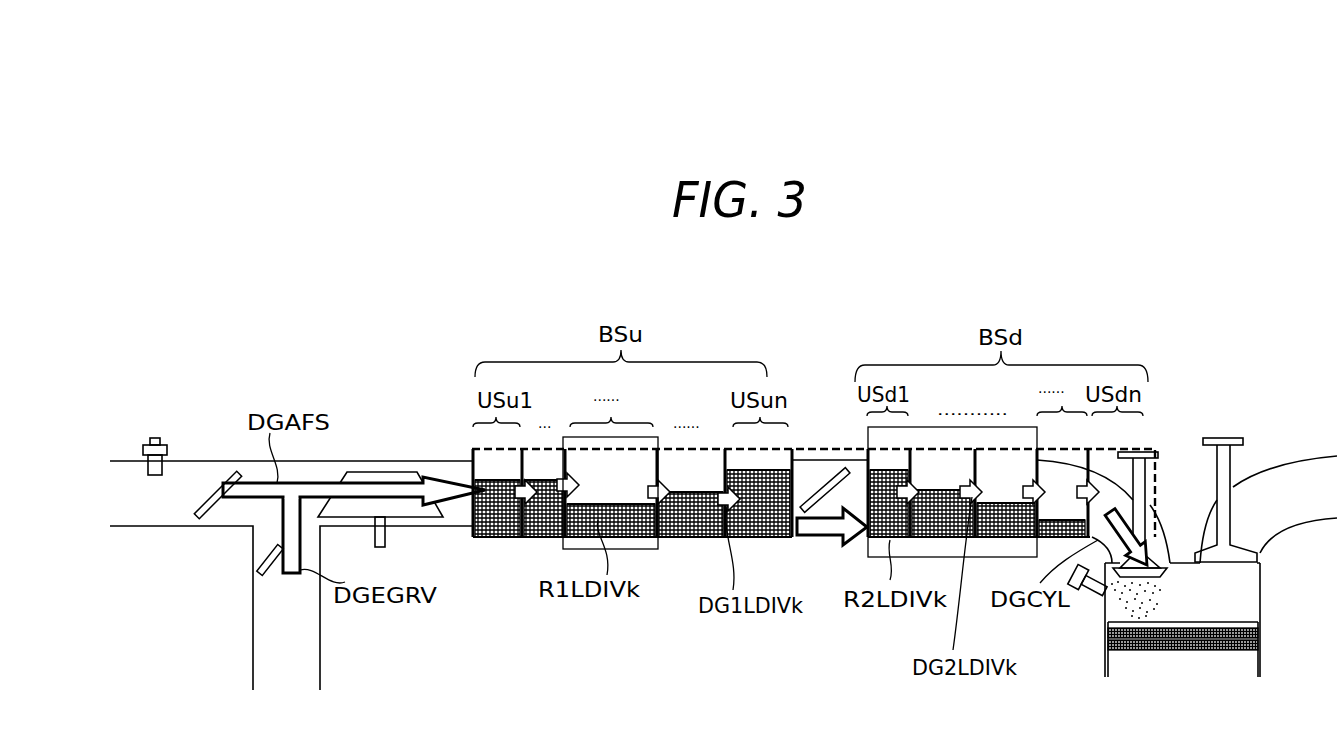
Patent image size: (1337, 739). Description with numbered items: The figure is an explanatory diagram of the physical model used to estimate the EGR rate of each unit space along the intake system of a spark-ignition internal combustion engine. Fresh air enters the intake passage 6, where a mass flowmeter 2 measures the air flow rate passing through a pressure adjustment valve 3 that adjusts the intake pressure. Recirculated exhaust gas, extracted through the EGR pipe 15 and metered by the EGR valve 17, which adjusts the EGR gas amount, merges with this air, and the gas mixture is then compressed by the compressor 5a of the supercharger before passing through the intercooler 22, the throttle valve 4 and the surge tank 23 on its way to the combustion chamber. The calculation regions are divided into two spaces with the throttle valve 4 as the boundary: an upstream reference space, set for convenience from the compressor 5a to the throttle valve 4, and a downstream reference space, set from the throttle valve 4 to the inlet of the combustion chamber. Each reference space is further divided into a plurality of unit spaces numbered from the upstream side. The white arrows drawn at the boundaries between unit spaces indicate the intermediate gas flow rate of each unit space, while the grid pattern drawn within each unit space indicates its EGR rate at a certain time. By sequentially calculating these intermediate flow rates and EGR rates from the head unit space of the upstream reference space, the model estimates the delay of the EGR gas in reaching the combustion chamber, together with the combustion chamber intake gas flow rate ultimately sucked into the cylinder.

The mass flowmeter 2 is at (153, 438).
The pressure adjustment valve 3 is at (215, 493).
The throttle valve 4 is at (832, 477).
The compressor 5a is at (397, 470).
The intake passage 6 is at (447, 461).
The EGR pipe 15 is at (322, 670).
The EGR valve 17 is at (257, 563).
The intercooler 22 is at (640, 550).
The surge tank 23 is at (923, 425).